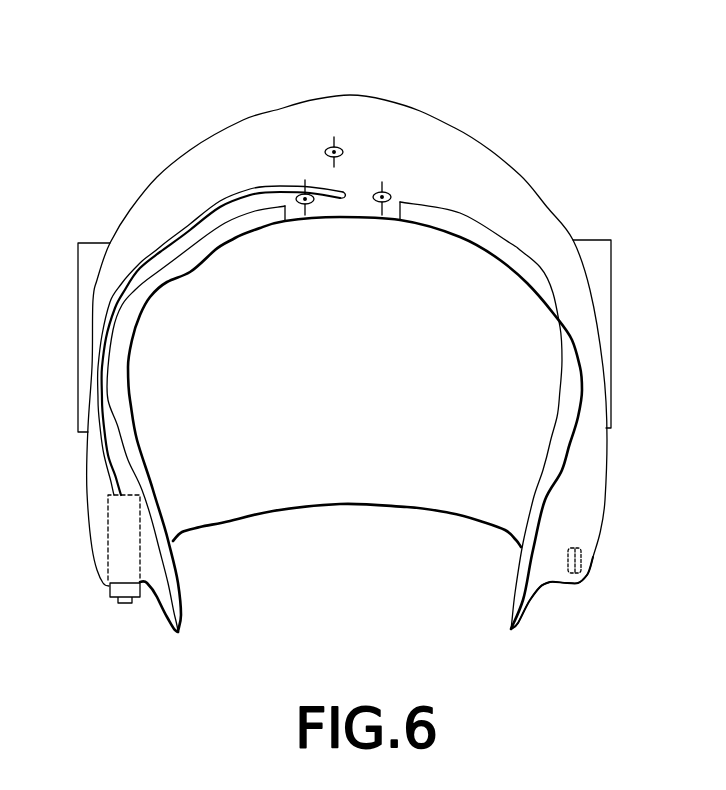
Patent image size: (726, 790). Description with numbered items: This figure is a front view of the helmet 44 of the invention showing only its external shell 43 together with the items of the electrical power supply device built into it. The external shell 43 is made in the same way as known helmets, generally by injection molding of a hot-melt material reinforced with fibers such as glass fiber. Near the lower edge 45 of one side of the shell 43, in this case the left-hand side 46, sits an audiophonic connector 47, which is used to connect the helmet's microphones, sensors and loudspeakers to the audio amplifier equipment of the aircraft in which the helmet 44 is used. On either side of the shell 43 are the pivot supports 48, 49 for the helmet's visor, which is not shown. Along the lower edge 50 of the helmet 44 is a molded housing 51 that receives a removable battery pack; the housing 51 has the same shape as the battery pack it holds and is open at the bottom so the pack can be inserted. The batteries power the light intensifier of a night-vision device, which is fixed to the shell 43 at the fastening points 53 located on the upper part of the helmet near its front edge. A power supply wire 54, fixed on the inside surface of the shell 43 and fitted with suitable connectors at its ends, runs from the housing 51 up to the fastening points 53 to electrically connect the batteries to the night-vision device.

The external shell 43 is at (514, 160).
The helmet 44 is at (451, 109).
The lower edge 45 is at (531, 612).
The left-hand side 46 is at (590, 573).
The audiophonic connector 47 is at (582, 557).
The pivot support 48 is at (95, 253).
The pivot support 49 is at (595, 250).
The lower edge 50 is at (166, 621).
The molded housing 51 is at (117, 545).
The fastening points 53 is at (370, 207).
The power supply wire 54 is at (213, 200).